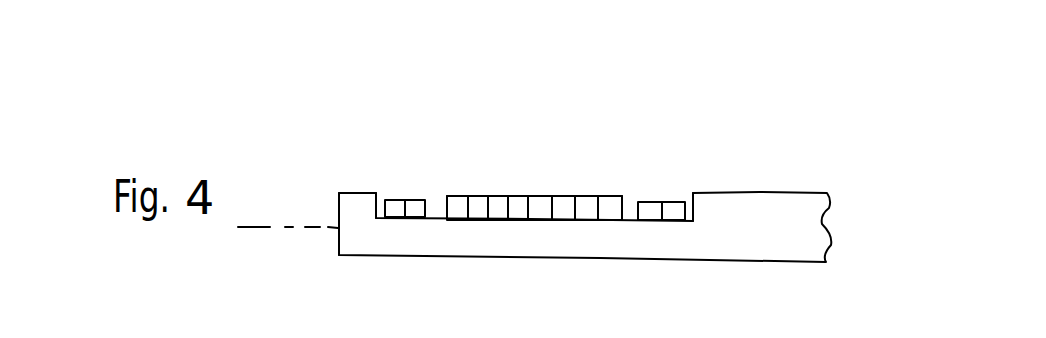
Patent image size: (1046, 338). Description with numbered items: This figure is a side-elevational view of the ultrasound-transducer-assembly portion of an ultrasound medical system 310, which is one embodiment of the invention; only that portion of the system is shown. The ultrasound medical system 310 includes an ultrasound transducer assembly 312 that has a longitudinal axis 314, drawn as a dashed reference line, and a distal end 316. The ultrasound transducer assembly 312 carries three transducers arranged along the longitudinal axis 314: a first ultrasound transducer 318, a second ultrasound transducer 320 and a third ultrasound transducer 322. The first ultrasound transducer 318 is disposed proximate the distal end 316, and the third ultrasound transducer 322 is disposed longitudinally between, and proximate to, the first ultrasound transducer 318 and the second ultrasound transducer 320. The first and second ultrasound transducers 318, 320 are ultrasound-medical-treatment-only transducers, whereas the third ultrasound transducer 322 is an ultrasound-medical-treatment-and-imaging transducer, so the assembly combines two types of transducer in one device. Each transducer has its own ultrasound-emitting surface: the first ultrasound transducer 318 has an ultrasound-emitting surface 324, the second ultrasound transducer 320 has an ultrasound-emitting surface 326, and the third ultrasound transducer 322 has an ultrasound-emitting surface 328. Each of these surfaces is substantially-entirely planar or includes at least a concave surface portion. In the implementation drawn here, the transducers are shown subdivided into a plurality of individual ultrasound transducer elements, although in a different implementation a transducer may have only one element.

The ultrasound medical system 310 is at (416, 116).
The ultrasound transducer assembly 312 is at (543, 158).
The longitudinal axis 314 is at (252, 228).
The distal end 316 is at (338, 238).
The first ultrasound transducer 318 is at (409, 186).
The second ultrasound transducer 320 is at (652, 188).
The third ultrasound transducer 322 is at (494, 185).
The ultrasound-emitting surface 324 is at (393, 197).
The ultrasound-emitting surface 326 is at (668, 202).
The ultrasound-emitting surface 328 is at (583, 196).